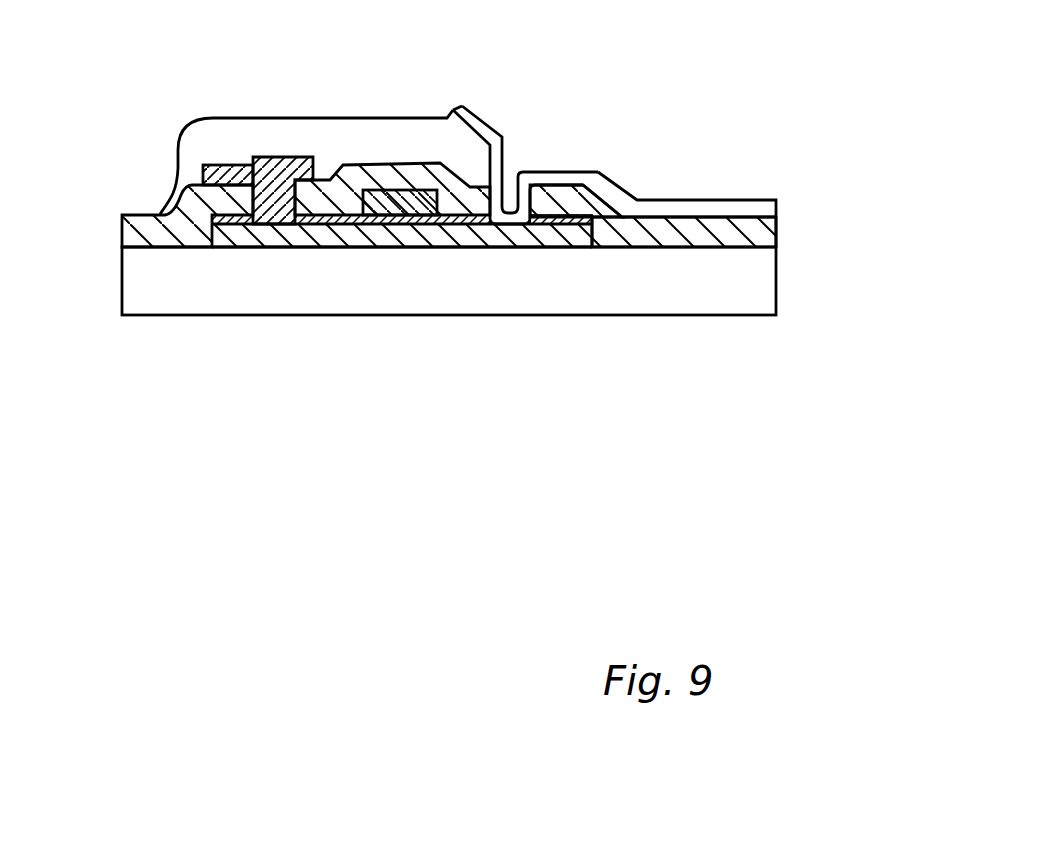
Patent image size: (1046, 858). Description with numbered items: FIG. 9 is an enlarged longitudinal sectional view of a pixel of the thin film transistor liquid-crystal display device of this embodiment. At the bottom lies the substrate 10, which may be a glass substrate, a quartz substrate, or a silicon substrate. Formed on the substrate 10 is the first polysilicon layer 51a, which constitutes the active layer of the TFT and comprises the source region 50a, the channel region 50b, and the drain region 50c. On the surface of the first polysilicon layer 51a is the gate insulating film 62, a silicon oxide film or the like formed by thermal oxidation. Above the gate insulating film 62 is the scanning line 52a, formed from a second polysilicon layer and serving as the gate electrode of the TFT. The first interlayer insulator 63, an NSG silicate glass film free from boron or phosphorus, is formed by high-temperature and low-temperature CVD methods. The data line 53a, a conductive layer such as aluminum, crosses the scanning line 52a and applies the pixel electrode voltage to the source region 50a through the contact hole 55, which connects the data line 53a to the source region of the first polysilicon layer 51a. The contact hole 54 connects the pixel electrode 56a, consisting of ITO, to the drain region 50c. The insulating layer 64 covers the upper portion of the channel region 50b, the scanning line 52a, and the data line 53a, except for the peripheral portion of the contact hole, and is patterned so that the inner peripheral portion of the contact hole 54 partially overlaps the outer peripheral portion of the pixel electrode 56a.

The substrate 10 is at (133, 292).
The first interlayer insulator 63 is at (177, 225).
The data line 53a is at (253, 167).
The contact hole 55 is at (281, 160).
The gate insulating film 62 is at (344, 230).
The scanning line 52a is at (407, 200).
The source region 50a is at (287, 230).
The channel region 50b is at (397, 233).
The drain region 50c is at (536, 357).
The first polysilicon layer 51a is at (417, 403).
The insulating layer 64 is at (332, 118).
The contact hole 54 is at (512, 195).
The pixel electrode 56a is at (758, 207).